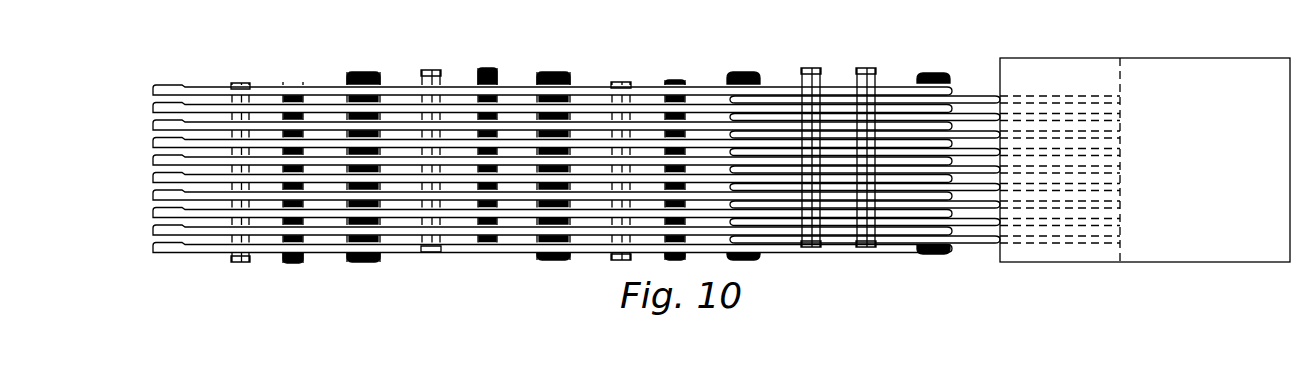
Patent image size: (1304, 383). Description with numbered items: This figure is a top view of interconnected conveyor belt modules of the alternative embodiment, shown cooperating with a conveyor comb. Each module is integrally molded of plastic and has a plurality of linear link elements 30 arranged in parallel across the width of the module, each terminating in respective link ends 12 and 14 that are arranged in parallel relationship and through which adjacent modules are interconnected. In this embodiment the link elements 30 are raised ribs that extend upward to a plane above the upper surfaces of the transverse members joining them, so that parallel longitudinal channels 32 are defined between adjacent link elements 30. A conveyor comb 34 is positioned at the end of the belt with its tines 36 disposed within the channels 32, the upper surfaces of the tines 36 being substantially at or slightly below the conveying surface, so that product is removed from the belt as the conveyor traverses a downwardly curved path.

The link end 12 is at (350, 86).
The link end 14 is at (152, 84).
The link element 30 is at (208, 90).
The longitudinal channel 32 is at (918, 148).
The conveyor comb 34 is at (1206, 153).
The tine 36 is at (965, 148).